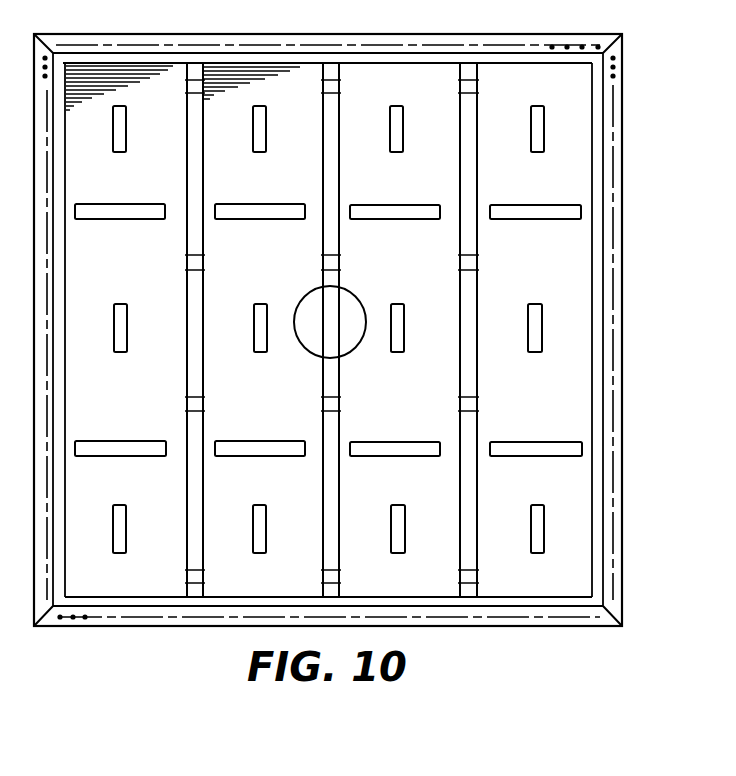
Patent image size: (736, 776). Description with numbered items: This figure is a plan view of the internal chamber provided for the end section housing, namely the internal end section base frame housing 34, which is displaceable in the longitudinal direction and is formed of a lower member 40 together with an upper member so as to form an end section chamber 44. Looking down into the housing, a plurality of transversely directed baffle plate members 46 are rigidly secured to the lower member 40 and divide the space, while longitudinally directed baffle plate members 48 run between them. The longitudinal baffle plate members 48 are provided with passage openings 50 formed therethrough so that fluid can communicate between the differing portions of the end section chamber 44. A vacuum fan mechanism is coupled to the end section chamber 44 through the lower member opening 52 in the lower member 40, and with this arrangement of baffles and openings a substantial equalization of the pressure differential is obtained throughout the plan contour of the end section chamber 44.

The internal end section base frame housing 34 is at (622, 265).
The lower member 40 is at (592, 430).
The end section chamber 44 is at (592, 337).
The transversely directed baffle plate members 46 is at (145, 441).
The longitudinally directed baffle plate members 48 is at (200, 378).
The passage openings 50 is at (339, 264).
The lower member opening 52 is at (356, 348).